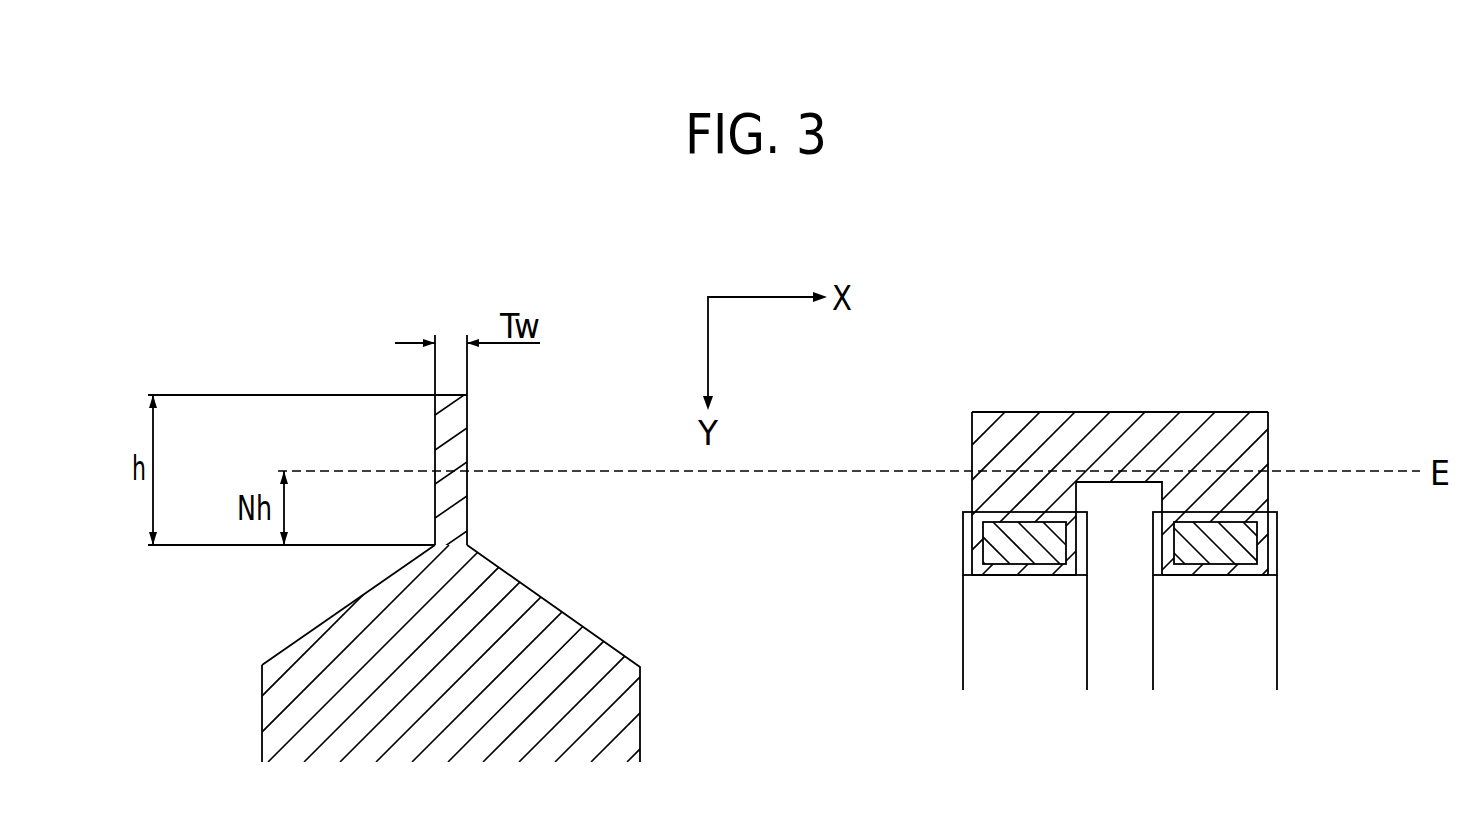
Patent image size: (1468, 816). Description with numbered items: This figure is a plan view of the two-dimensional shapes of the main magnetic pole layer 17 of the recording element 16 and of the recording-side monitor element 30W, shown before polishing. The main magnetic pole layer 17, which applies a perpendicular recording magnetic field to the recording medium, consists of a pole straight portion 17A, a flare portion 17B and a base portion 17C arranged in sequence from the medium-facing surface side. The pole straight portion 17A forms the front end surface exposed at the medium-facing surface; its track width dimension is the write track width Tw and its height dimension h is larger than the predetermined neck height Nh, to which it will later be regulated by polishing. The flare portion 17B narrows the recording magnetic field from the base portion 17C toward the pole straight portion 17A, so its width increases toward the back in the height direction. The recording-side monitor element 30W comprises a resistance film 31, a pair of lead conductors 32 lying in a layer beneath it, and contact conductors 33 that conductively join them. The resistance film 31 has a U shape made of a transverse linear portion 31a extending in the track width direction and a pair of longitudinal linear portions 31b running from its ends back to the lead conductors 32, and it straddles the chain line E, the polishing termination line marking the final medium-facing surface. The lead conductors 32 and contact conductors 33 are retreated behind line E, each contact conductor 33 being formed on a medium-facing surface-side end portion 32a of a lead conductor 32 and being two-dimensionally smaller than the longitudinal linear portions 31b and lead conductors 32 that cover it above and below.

The recording element 16 is at (430, 498).
The main magnetic pole layer 17 is at (563, 655).
The pole straight portion 17A is at (455, 443).
The flare portion 17B is at (350, 604).
The base portion 17C is at (262, 705).
The recording-side monitor element 30W is at (1116, 472).
The resistance film 31 is at (1270, 425).
The transverse linear portion 31a is at (1128, 418).
The longitudinal linear portions 31b is at (975, 485).
The lead conductor 32 is at (990, 662).
The medium-facing surface-side end portion 32a is at (985, 537).
The contact conductor 33 is at (997, 550).